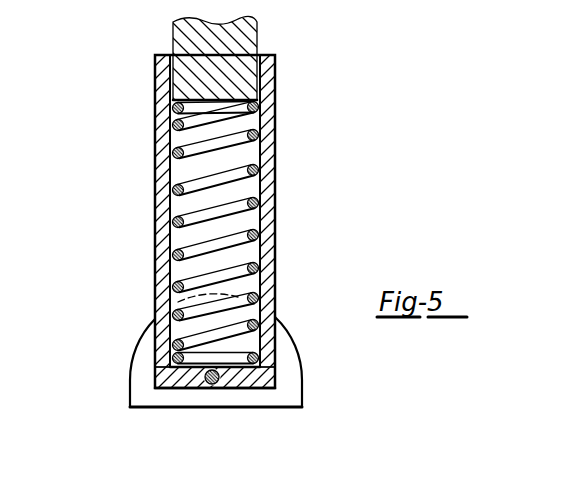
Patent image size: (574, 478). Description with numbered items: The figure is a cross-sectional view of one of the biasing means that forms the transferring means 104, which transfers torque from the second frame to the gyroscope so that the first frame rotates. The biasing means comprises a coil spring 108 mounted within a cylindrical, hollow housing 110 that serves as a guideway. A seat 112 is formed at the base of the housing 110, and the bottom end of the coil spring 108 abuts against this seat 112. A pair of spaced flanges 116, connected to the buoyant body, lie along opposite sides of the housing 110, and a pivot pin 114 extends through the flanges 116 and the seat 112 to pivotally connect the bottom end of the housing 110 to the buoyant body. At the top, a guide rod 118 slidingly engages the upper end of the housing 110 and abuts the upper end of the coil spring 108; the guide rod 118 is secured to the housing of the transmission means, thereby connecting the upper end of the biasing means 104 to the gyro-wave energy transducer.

The transferring means 104 is at (120, 213).
The coil spring 108 is at (238, 124).
The housing 110 is at (164, 112).
The seat 112 is at (160, 375).
The pivot pin 114 is at (212, 389).
The flanges 116 is at (128, 397).
The guide rod 118 is at (245, 52).